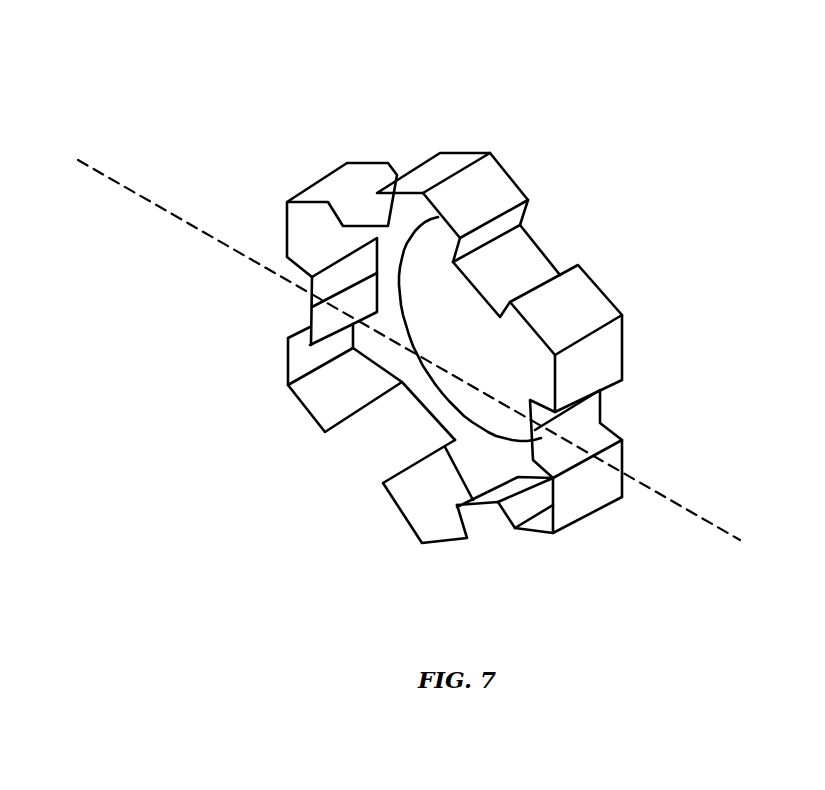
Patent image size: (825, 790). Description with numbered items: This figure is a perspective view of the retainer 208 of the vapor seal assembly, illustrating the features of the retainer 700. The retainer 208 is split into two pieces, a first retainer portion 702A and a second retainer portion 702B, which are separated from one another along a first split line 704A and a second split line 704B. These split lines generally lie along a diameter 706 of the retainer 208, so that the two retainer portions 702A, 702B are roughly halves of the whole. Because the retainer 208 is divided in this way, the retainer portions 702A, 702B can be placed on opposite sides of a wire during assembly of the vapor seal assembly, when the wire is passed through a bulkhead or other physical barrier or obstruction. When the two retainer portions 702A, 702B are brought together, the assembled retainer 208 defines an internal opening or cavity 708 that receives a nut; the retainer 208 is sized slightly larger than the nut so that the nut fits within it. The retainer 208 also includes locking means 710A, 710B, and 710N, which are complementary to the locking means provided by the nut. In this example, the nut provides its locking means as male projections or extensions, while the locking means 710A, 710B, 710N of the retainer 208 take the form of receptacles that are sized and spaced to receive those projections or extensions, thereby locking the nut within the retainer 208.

The features of the retainer 700 is at (406, 309).
The retainer portion 702A is at (712, 104).
The retainer portion 702B is at (143, 578).
The retainer 208 is at (729, 267).
The diameter 706 is at (136, 195).
The split line 704A is at (280, 293).
The split line 704B is at (615, 439).
The internal opening or cavity 708 is at (341, 382).
The locking means 710A is at (287, 218).
The locking means 710B is at (464, 178).
The locking means 710N is at (589, 323).